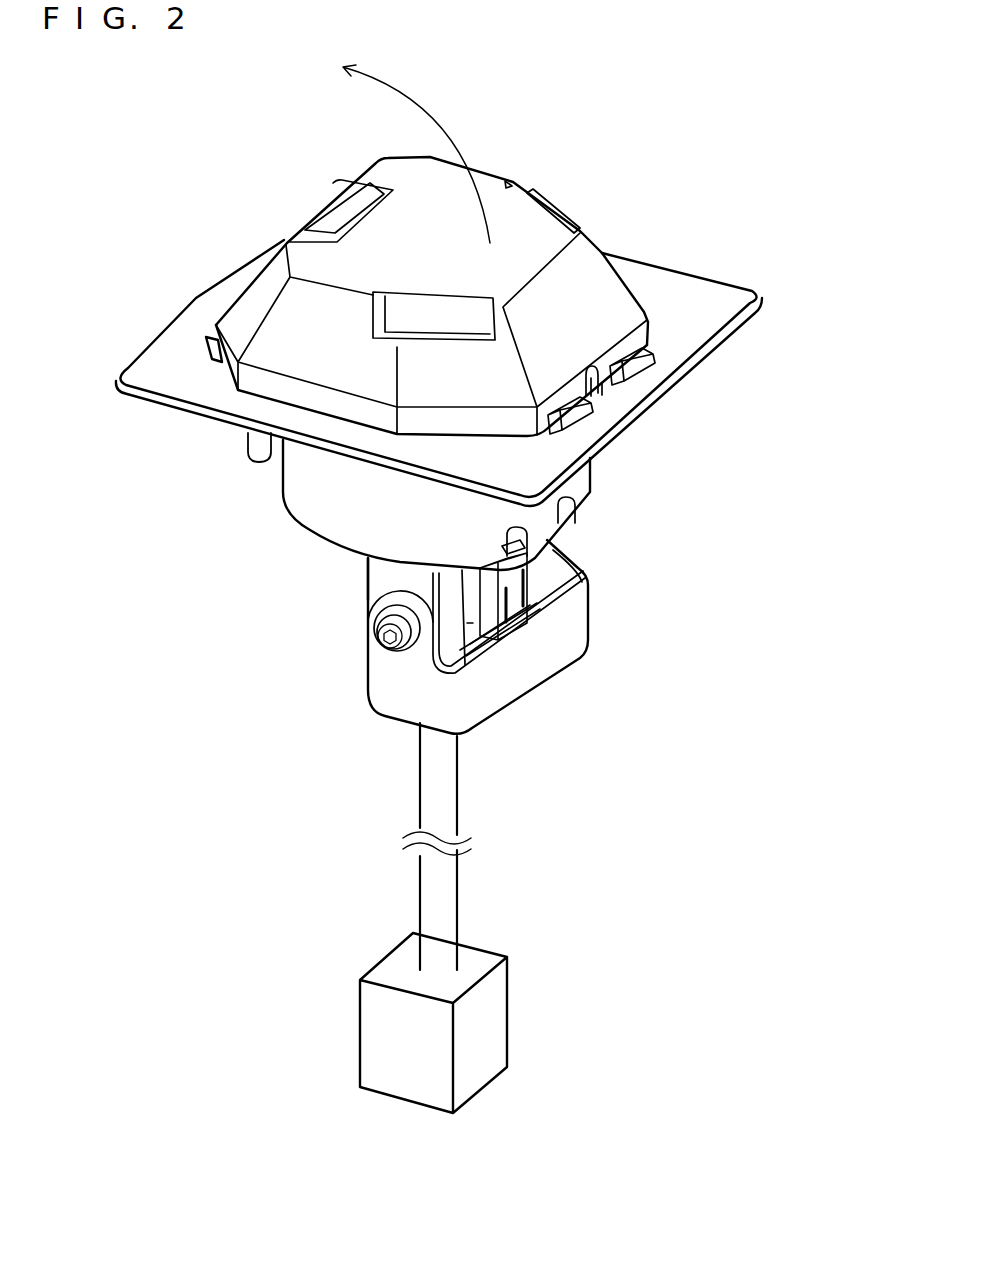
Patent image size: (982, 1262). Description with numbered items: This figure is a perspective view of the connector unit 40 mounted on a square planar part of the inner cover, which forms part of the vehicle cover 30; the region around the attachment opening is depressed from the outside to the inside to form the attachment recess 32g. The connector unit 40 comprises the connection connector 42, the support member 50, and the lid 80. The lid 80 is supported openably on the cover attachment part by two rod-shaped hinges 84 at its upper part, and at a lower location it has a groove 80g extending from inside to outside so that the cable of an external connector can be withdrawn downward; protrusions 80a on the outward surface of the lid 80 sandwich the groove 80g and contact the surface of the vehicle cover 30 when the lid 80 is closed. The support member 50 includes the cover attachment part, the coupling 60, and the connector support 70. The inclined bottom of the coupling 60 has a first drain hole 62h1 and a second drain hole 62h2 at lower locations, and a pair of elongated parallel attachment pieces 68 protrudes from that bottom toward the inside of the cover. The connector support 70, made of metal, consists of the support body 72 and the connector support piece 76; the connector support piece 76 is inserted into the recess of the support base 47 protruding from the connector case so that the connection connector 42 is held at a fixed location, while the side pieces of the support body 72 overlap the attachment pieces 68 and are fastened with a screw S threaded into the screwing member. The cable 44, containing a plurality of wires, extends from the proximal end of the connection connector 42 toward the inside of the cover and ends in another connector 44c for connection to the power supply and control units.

The connector unit 40 is at (682, 154).
The vehicle cover 30 is at (724, 277).
The attachment recess 32g is at (208, 343).
The hinge 84 is at (247, 445).
The lid 80 is at (505, 167).
The protrusion 80a is at (645, 375).
The groove 80g is at (603, 382).
The support member 50 is at (286, 530).
The coupling 60 is at (333, 541).
The first drain hole 62h1 is at (573, 508).
The second drain hole 62h2 is at (516, 540).
The attachment piece 68 is at (367, 583).
The connector support 70 is at (642, 674).
The support body 72 is at (542, 693).
The connector support piece 76 is at (520, 624).
The support base 47 is at (537, 593).
The connection connector 42 is at (514, 655).
The screw S is at (396, 653).
The cable 44 is at (460, 881).
The connector 44c is at (498, 1019).